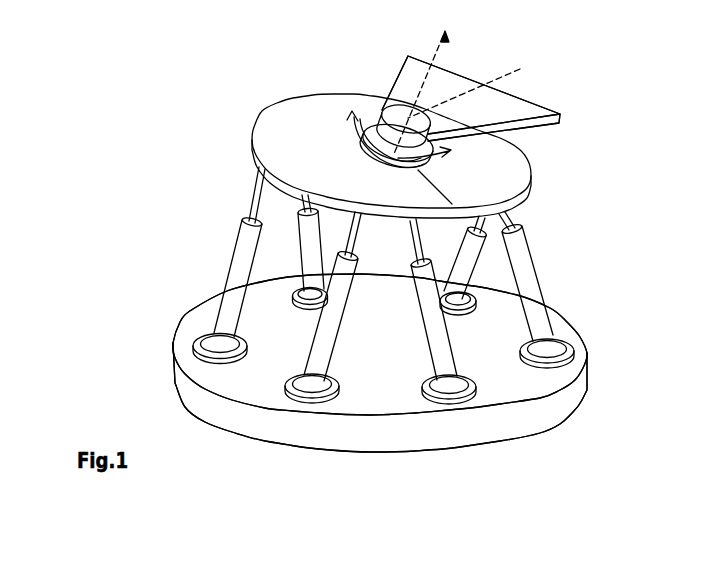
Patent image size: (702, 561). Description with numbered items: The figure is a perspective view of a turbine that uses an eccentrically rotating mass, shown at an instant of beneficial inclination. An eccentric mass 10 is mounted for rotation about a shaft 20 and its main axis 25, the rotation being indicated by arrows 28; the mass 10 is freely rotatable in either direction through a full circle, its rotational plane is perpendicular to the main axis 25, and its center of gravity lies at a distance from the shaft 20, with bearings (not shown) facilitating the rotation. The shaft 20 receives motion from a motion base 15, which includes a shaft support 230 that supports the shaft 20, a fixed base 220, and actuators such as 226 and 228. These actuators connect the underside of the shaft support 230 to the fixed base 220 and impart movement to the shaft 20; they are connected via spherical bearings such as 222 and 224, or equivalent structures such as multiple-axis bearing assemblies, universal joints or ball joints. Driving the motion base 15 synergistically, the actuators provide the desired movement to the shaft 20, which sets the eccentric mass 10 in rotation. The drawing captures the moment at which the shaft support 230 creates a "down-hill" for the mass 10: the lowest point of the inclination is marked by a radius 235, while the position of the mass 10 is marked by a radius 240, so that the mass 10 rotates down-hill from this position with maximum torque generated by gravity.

The eccentric mass 10 is at (503, 107).
The motion base 15 is at (187, 233).
The shaft 20 is at (390, 97).
The main axis 25 is at (437, 48).
The arrows 28 is at (447, 153).
The fixed base 220 is at (570, 390).
The spherical bearing 222 is at (208, 347).
The spherical bearing 224 is at (304, 383).
The actuator 226 is at (333, 353).
The actuator 228 is at (508, 218).
The shaft support 230 is at (274, 137).
The radius 235 is at (422, 190).
The radius 240 is at (473, 83).